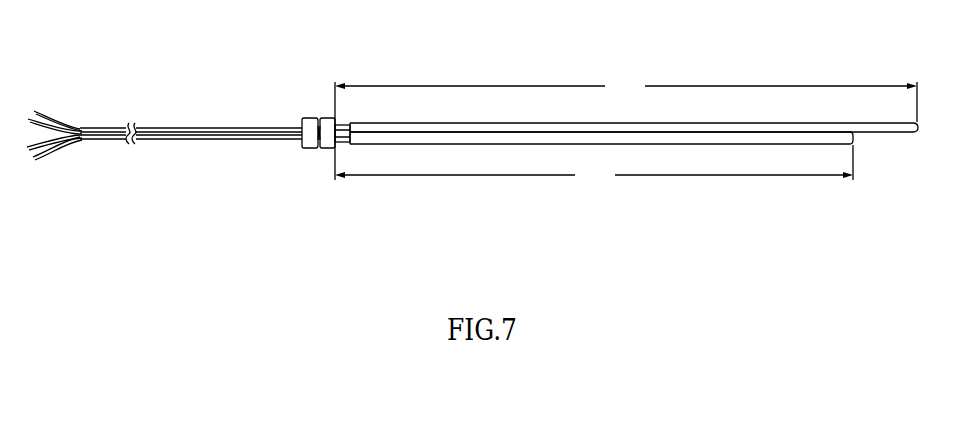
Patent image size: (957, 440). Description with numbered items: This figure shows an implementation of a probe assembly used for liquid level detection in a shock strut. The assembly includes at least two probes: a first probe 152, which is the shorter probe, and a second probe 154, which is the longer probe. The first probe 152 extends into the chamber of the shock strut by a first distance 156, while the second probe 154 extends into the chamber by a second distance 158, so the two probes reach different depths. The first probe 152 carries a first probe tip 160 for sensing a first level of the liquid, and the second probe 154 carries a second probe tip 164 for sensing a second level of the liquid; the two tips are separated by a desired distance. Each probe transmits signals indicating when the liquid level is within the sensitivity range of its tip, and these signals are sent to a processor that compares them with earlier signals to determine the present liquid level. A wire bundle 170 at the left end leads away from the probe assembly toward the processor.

The cable connector body 152 is at (339, 146).
The collar / strain relief 154 is at (344, 122).
The sheath length dimension 156 is at (594, 165).
The probe tube length dimension 158 is at (626, 129).
The sheath end 160 is at (855, 136).
The probe tip 164 is at (919, 125).
The cable wire bundle 170 is at (66, 103).